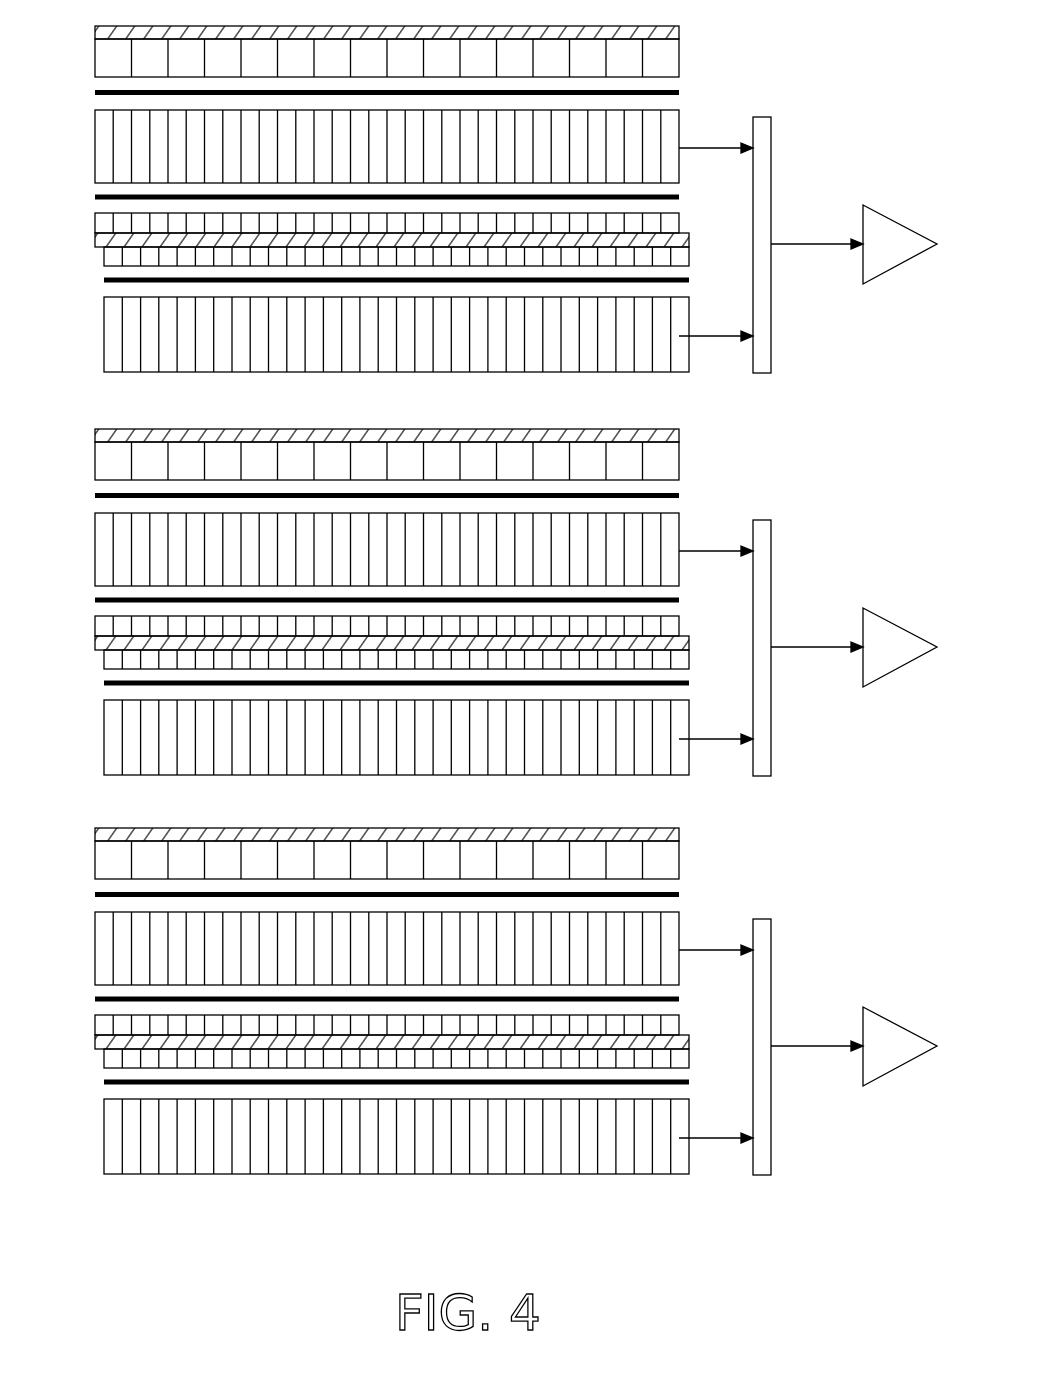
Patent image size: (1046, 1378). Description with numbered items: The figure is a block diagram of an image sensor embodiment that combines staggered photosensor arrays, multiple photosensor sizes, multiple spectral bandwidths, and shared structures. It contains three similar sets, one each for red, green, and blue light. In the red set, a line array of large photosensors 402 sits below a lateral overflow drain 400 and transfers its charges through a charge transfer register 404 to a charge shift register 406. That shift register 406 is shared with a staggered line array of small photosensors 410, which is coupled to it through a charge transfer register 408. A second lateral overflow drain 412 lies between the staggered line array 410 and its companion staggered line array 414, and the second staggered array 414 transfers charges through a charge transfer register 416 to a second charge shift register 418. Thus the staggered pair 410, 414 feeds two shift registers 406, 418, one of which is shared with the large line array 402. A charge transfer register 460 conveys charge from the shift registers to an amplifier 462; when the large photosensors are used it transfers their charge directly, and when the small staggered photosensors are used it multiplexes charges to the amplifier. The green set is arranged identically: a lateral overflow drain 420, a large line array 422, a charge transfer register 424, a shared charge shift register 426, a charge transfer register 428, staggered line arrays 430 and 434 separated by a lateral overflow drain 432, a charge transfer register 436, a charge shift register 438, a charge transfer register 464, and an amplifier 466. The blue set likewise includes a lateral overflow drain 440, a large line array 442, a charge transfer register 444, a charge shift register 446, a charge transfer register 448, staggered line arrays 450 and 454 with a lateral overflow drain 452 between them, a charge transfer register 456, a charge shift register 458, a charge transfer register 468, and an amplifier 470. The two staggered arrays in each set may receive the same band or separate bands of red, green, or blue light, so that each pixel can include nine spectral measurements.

The lateral overflow drain 400 is at (679, 32).
The line array of large photosensors 402 is at (679, 58).
The charge transfer register 404 is at (679, 91).
The charge shift register 406 is at (679, 114).
The charge transfer register 408 is at (679, 195).
The staggered line array of photosensors 410 is at (679, 216).
The lateral overflow drain 412 is at (689, 238).
The staggered line array of photosensors 414 is at (689, 256).
The charge transfer register 416 is at (689, 282).
The charge shift register 418 is at (689, 368).
The charge transfer register 460 is at (771, 162).
The amplifier 462 is at (907, 256).
The lateral overflow drain 420 is at (415, 422).
The line array of large photosensors 422 is at (416, 456).
The charge transfer register 424 is at (416, 481).
The charge shift register 426 is at (416, 540).
The charge transfer register 428 is at (416, 585).
The staggered line array of photosensors 430 is at (420, 617).
The lateral overflow drain 432 is at (424, 644).
The staggered line array of photosensors 434 is at (429, 665).
The charge transfer register 436 is at (431, 702).
The charge shift register 438 is at (431, 750).
The charge transfer register 464 is at (757, 648).
The amplifier 466 is at (854, 647).
The lateral overflow drain 440 is at (415, 821).
The line array of large photosensors 442 is at (416, 855).
The charge transfer register 444 is at (416, 880).
The charge shift register 446 is at (416, 939).
The charge transfer register 448 is at (416, 984).
The staggered line array of photosensors 450 is at (420, 1016).
The lateral overflow drain 452 is at (424, 1043).
The staggered line array of photosensors 454 is at (429, 1064).
The charge transfer register 456 is at (431, 1101).
The charge shift register 458 is at (431, 1149).
The charge transfer register 468 is at (757, 1047).
The amplifier 470 is at (854, 1046).